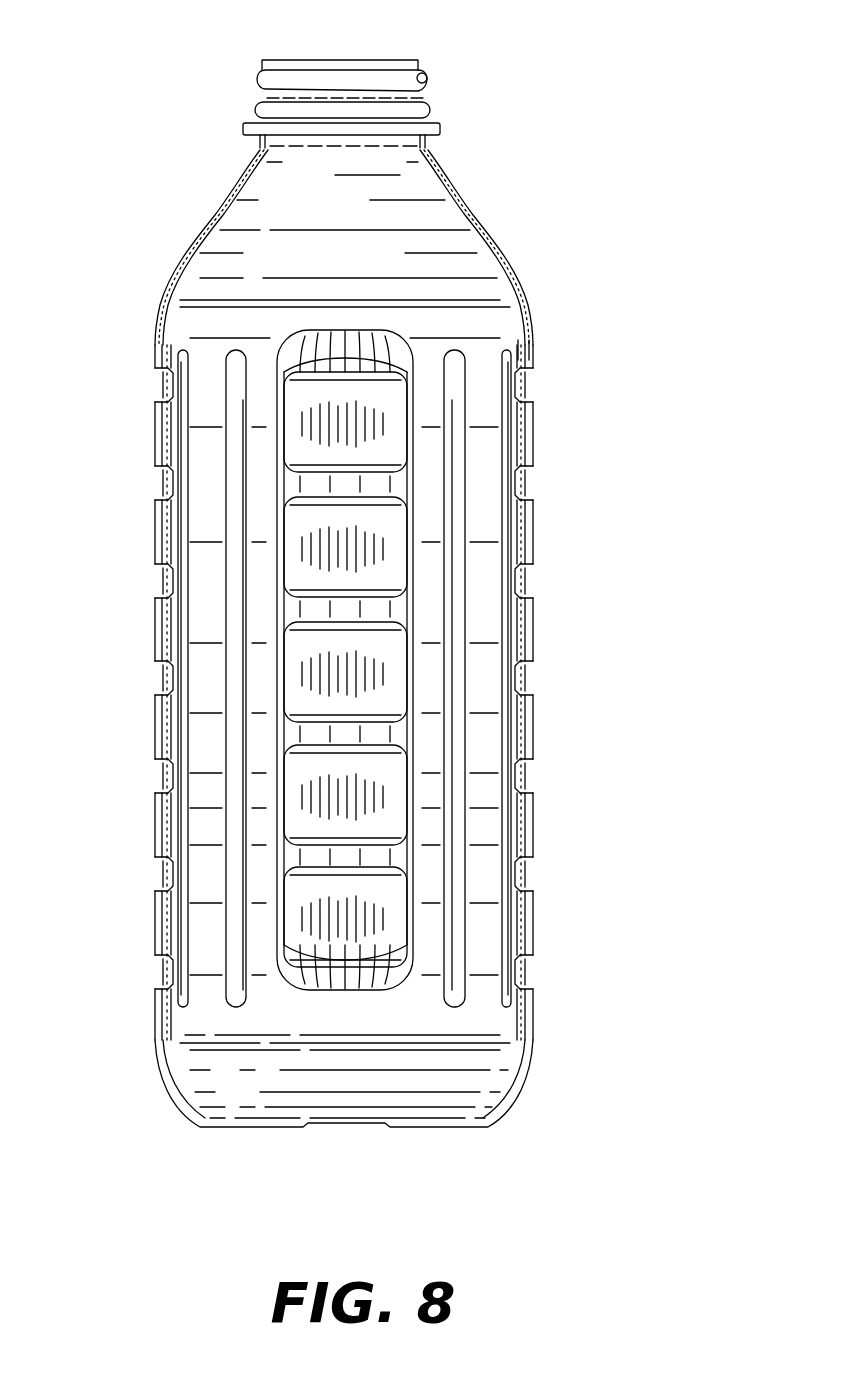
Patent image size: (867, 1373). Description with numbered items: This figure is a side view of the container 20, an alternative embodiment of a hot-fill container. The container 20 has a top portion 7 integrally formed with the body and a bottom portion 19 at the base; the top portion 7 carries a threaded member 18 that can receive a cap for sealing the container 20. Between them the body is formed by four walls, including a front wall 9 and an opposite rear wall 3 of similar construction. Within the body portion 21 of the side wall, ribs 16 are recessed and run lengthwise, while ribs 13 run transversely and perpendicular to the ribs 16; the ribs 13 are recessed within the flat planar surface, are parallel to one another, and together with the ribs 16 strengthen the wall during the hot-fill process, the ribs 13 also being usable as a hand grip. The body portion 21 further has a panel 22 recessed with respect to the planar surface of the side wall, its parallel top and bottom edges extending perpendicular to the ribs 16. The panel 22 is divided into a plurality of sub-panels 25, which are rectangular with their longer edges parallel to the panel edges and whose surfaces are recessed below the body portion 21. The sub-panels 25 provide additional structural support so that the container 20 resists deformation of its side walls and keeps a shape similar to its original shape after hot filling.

The rear wall 3 is at (538, 723).
The top portion 7 is at (452, 216).
The front wall 9 is at (166, 614).
The ribs 13 is at (160, 578).
The ribs 16 is at (243, 1007).
The threaded member 18 is at (430, 86).
The bottom portion 19 is at (447, 1128).
The container 20 is at (606, 367).
The body portion 21 is at (523, 332).
The panel 22 is at (340, 336).
The sub-panels 25 is at (393, 529).